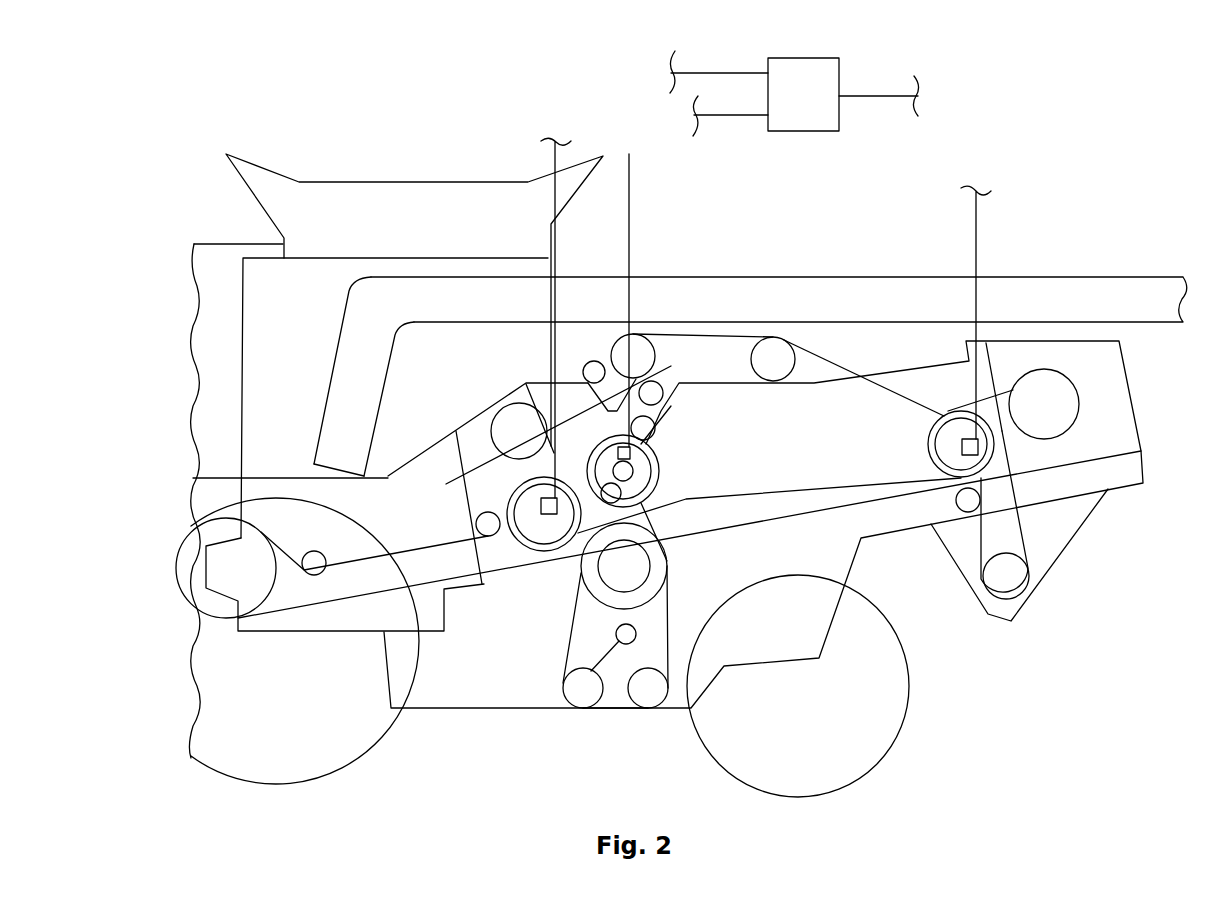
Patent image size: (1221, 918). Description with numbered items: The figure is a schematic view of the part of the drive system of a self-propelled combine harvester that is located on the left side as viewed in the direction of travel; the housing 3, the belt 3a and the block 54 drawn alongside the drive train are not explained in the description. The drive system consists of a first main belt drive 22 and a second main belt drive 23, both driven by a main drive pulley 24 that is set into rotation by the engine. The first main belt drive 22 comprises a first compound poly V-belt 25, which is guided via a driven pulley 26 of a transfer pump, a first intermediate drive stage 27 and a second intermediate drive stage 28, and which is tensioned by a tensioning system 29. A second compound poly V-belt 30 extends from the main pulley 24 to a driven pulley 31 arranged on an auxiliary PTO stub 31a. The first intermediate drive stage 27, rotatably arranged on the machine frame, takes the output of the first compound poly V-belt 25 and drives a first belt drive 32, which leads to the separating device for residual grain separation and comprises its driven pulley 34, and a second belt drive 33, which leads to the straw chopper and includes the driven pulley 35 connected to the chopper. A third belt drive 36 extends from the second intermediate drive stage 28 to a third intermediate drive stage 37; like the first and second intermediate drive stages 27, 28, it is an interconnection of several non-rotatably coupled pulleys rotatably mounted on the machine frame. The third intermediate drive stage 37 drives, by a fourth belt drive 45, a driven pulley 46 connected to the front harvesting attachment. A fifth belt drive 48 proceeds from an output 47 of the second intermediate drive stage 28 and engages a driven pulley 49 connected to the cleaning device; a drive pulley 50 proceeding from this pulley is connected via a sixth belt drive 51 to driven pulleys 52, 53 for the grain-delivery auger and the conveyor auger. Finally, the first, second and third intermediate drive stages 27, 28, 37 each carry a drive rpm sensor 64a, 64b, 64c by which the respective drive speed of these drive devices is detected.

The hopper 3 is at (355, 203).
The conveyor belt 3a is at (1145, 275).
The controller 54 is at (794, 93).
The second compound poly V-belt 30 is at (563, 392).
The main drive pulley 24 is at (632, 352).
The first main belt drive 22 is at (717, 334).
The driven pulley of a transfer pump 26 is at (775, 350).
The first compound poly V-belt 25 is at (842, 360).
The first belt drive 32 is at (999, 382).
The second main belt drive 23 is at (538, 393).
The driven pulley 31 is at (520, 430).
The auxiliary PTO stub 31a is at (550, 450).
The third belt drive 36 is at (470, 477).
The tensioning system 29 is at (645, 428).
The drive rpm sensor 64b is at (632, 450).
The second intermediate drive stage 28 is at (640, 457).
The output of the second intermediate drive stage 47 is at (628, 470).
The fifth belt drive 48 is at (658, 513).
The first intermediate drive stage 27 is at (945, 440).
The drive rpm sensor 64c is at (980, 447).
The driven pulley of the separating device 34 is at (1048, 401).
The second belt drive 33 is at (1017, 525).
The driven pulley 35 is at (1006, 577).
The driven pulley 49 is at (667, 553).
The drive pulley 50 is at (612, 578).
The sixth belt drive 51 is at (663, 613).
The third intermediate drive stage 37 is at (540, 520).
The drive rpm sensor 64a is at (547, 527).
The fourth belt drive 45 is at (327, 597).
The driven pulley 46 is at (228, 573).
The driven pulley 53 is at (585, 700).
The driven pulley 52 is at (647, 707).